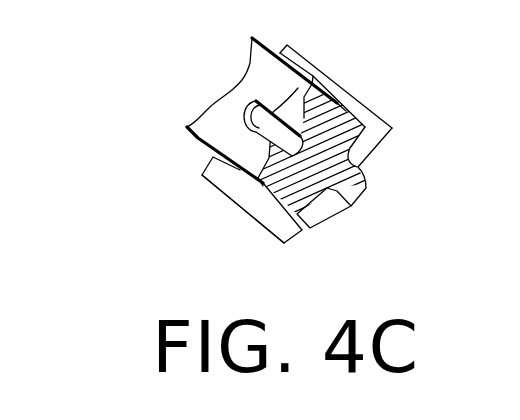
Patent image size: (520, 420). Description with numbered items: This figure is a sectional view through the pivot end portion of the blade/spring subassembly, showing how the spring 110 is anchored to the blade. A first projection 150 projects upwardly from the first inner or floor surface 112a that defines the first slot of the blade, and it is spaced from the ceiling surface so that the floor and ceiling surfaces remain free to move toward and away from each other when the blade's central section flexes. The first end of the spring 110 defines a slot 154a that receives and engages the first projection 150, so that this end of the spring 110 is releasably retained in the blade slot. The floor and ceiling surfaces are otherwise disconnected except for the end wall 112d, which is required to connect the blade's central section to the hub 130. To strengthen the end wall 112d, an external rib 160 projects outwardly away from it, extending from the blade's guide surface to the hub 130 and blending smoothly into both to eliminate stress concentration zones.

The spring 110 is at (273, 73).
The first inner or floor surface 112a is at (268, 185).
The end wall 112d is at (342, 143).
The hub 130 is at (208, 168).
The first projection 150 is at (312, 80).
The first slot 154a is at (246, 116).
The external rib 160 is at (352, 195).